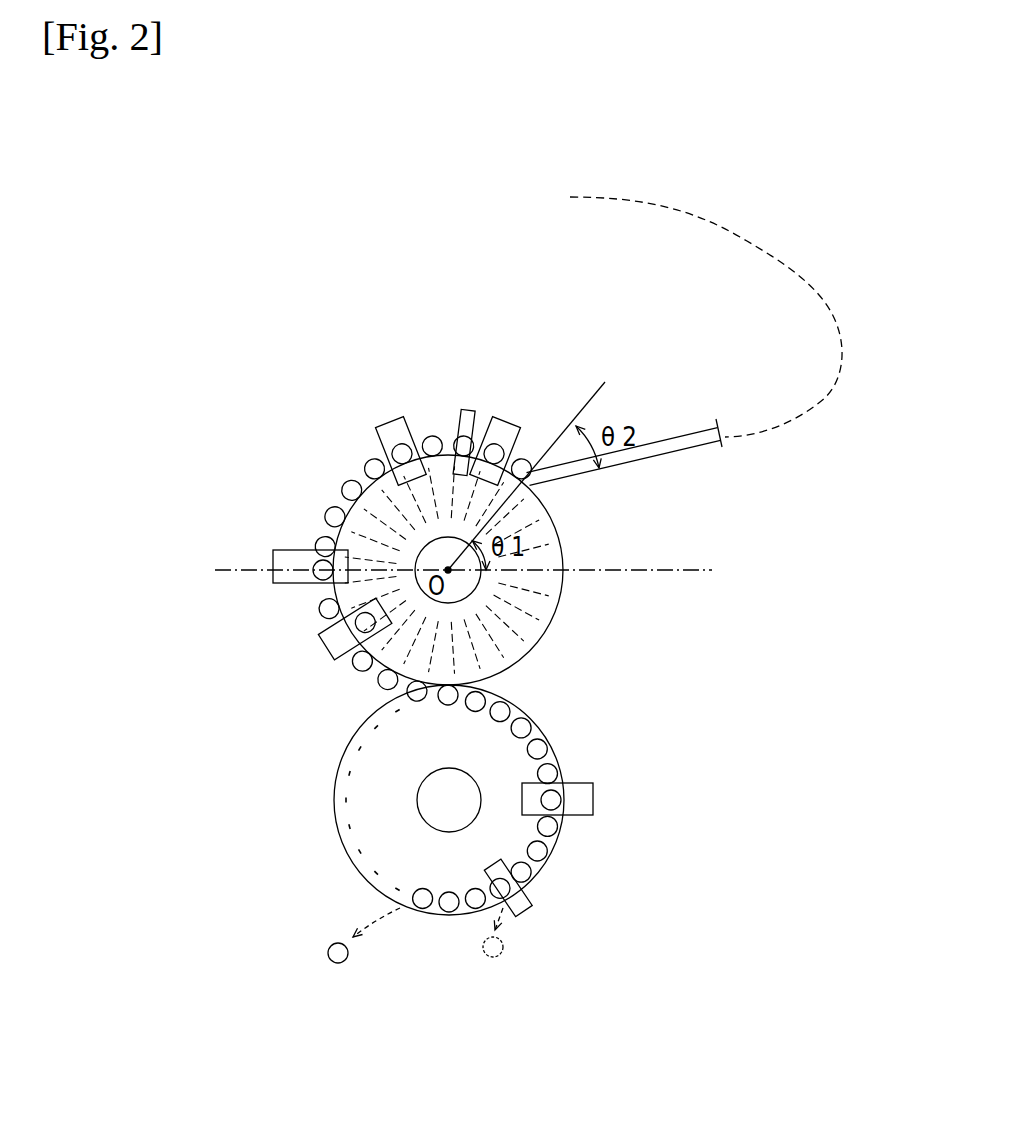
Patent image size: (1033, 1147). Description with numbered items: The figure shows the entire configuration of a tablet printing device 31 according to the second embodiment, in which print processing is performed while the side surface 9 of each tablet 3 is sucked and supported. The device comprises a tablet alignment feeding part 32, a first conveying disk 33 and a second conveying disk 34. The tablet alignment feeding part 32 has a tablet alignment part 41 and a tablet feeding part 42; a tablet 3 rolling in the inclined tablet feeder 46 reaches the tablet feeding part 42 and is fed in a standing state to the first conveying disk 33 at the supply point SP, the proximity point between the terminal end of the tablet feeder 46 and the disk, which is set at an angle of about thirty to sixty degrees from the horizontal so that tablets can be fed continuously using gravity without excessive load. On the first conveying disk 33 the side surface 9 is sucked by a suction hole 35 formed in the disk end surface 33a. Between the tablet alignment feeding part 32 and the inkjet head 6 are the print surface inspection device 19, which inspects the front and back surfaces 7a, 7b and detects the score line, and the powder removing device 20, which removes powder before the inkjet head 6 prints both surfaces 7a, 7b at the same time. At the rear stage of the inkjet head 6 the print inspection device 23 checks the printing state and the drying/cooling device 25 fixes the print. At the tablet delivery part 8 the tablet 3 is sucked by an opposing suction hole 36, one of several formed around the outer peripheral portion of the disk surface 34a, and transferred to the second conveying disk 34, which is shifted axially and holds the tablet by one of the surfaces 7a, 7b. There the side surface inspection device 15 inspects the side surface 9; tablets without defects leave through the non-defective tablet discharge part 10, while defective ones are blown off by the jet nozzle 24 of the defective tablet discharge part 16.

The tablet 3 is at (430, 437).
The inkjet head 6 is at (387, 417).
The front surface 7a is at (263, 640).
The back surface 7b is at (318, 613).
The tablet delivery part 8 is at (484, 688).
The side surface 9 is at (342, 478).
The non-defective tablet discharge part 10 is at (413, 922).
The side surface inspection device 15 is at (593, 802).
The defective tablet discharge part 16 is at (512, 925).
The print surface inspection device 19 is at (507, 420).
The powder removing device 20 is at (463, 410).
The print inspection device 23 is at (280, 583).
The jet nozzle 24 is at (533, 905).
The drying/cooling device 25 is at (322, 662).
The tablet printing device 31 is at (265, 420).
The tablet alignment feeding part 32 is at (649, 426).
The first conveying disk 33 is at (504, 570).
The disk end surface 33a is at (558, 527).
The second conveying disk 34 is at (384, 800).
The disk surface 34a is at (437, 752).
The suction hole 35 is at (566, 576).
The suction hole 36 is at (357, 746).
The tablet alignment part 41 is at (559, 180).
The tablet feeding part 42 is at (537, 458).
The tablet feeder 46 is at (690, 447).
The supply point SP is at (530, 483).